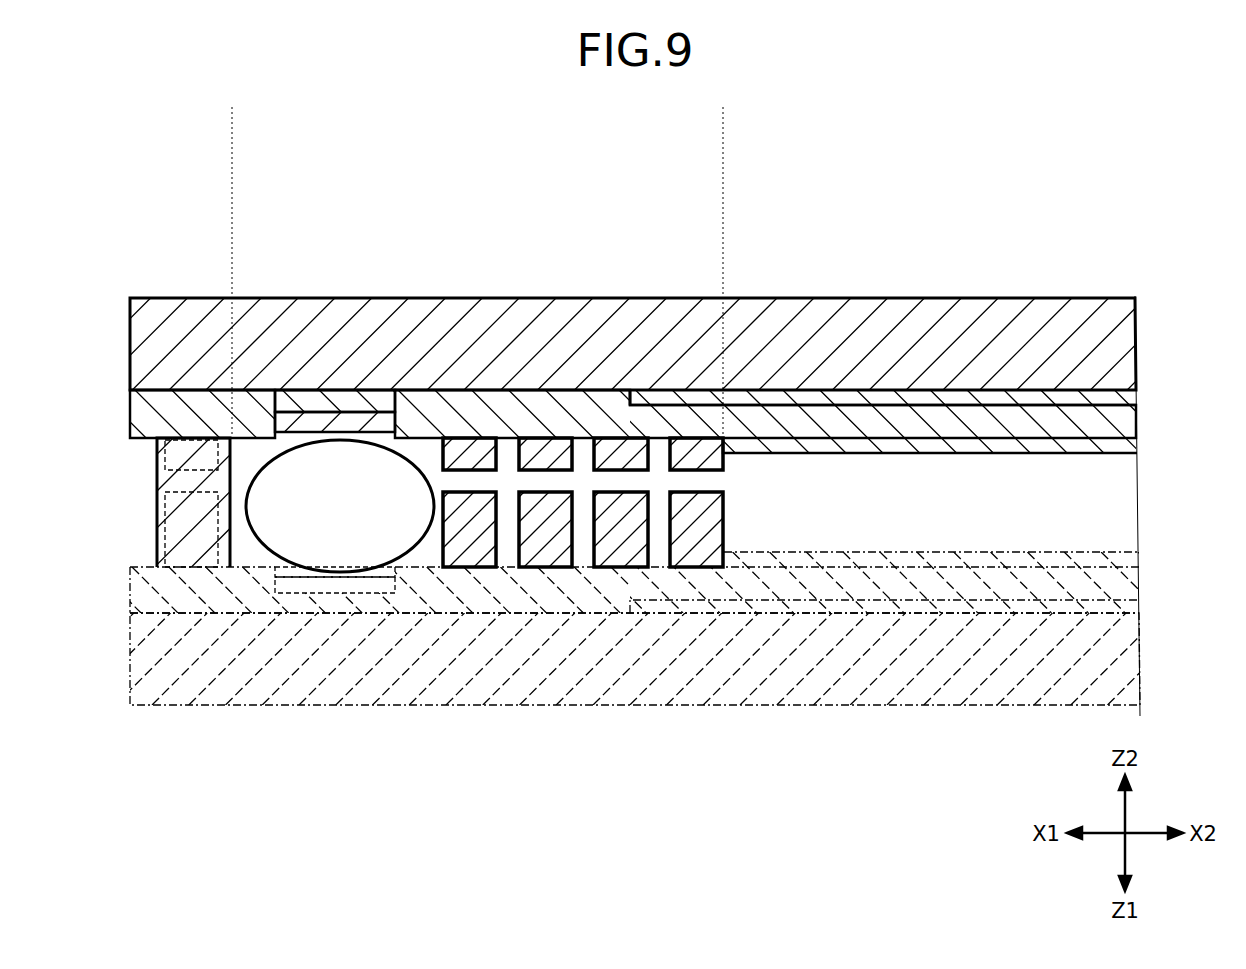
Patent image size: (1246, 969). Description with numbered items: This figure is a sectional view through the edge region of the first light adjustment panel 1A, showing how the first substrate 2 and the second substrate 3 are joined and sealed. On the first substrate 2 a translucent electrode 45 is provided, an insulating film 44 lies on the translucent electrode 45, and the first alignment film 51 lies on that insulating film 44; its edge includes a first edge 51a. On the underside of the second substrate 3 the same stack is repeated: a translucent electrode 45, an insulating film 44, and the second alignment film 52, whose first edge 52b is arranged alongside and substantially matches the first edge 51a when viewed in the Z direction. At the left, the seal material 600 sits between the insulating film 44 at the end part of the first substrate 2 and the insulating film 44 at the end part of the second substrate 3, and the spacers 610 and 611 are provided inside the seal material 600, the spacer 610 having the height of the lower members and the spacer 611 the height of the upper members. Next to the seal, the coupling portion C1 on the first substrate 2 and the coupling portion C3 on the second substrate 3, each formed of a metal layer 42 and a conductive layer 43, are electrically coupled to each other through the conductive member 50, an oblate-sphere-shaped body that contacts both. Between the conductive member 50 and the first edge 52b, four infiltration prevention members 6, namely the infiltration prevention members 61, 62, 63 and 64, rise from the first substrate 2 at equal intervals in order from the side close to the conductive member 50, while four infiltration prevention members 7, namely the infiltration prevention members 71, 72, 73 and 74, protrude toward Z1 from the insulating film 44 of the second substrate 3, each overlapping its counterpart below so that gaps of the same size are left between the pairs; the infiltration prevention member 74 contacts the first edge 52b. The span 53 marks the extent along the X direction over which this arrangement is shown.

The first light adjustment panel 1A is at (975, 212).
The first substrate 2 is at (1140, 665).
The second substrate 3 is at (1130, 338).
The metal layer 42 is at (303, 400).
The conductive layer 43 is at (347, 420).
The insulating film 44 is at (148, 425).
The translucent electrode 45 is at (1137, 397).
The conductive member 50 is at (273, 537).
The first alignment film 51 is at (1140, 556).
The first edge 51a is at (728, 545).
The second alignment film 52 is at (1137, 447).
The first edge 52b is at (712, 442).
The width of electrode region 53 is at (723, 135).
The infiltration prevention members 6 is at (574, 628).
The infiltration prevention member 61 is at (470, 550).
The infiltration prevention member 62 is at (547, 550).
The infiltration prevention member 63 is at (622, 550).
The infiltration prevention member 64 is at (700, 550).
The infiltration prevention members 7 is at (575, 357).
The infiltration prevention member 71 is at (470, 452).
The infiltration prevention member 72 is at (547, 452).
The infiltration prevention member 73 is at (620, 452).
The infiltration prevention member 74 is at (697, 452).
The seal material 600 is at (155, 487).
The spacer 610 is at (152, 545).
The spacer 611 is at (152, 455).
The coupling portion C1 is at (388, 766).
The coupling portion C3 is at (383, 248).